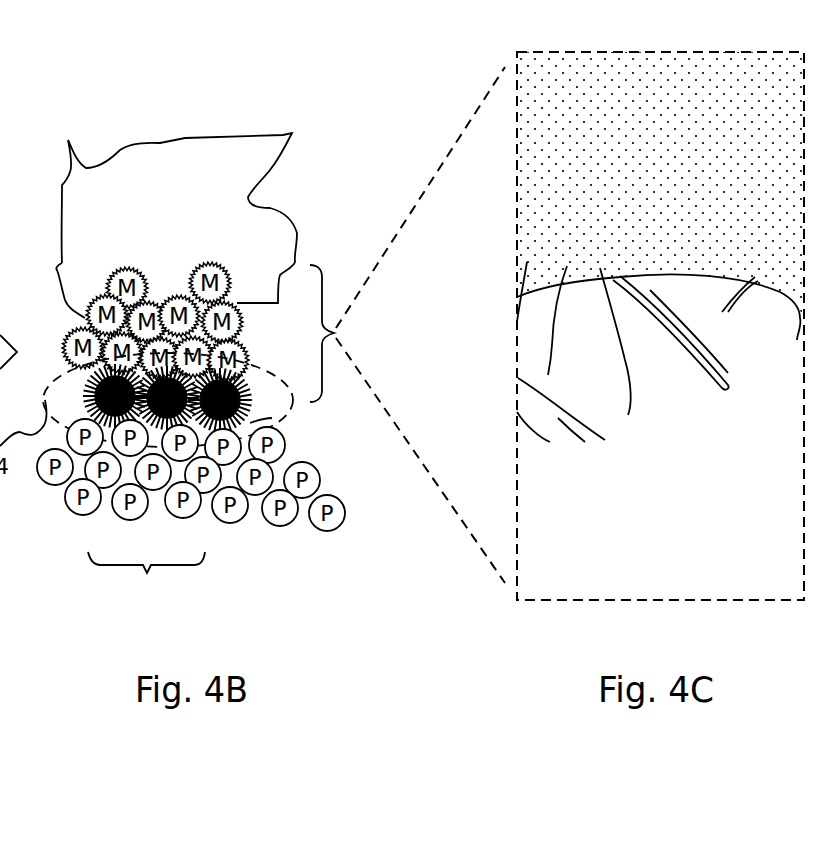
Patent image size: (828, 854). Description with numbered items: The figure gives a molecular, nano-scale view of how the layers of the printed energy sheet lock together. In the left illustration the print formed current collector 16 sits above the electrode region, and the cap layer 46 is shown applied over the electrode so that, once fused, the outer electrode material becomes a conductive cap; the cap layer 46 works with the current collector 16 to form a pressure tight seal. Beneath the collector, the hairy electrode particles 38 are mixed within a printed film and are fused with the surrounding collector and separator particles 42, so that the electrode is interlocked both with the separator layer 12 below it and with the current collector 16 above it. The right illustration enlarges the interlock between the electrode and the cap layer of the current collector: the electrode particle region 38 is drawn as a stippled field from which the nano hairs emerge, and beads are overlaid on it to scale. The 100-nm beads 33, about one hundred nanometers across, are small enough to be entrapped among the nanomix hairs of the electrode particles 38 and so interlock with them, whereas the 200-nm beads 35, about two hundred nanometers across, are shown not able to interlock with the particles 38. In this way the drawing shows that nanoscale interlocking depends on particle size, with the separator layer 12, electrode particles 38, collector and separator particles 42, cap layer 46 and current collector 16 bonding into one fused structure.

In FIG. 4B, the current collector 16 is at (196, 197).
In FIG. 4B, the cap layer 46 is at (72, 345).
In FIG. 4B, the electrode particles 38 is at (272, 418).
In FIG. 4C, the electrode particles 38 is at (646, 154).
In FIG. 4B, the collector and separator particles 42 is at (117, 525).
In FIG. 4B, the separator layer 12 is at (146, 580).
In FIG. 4C, the 100-nm beads 33 is at (548, 382).
In FIG. 4C, the 200-nm beads 35 is at (548, 560).
In FIG. 4C, the small particles 100 is at (643, 346).
In FIG. 4C, the large particles 200 is at (657, 468).